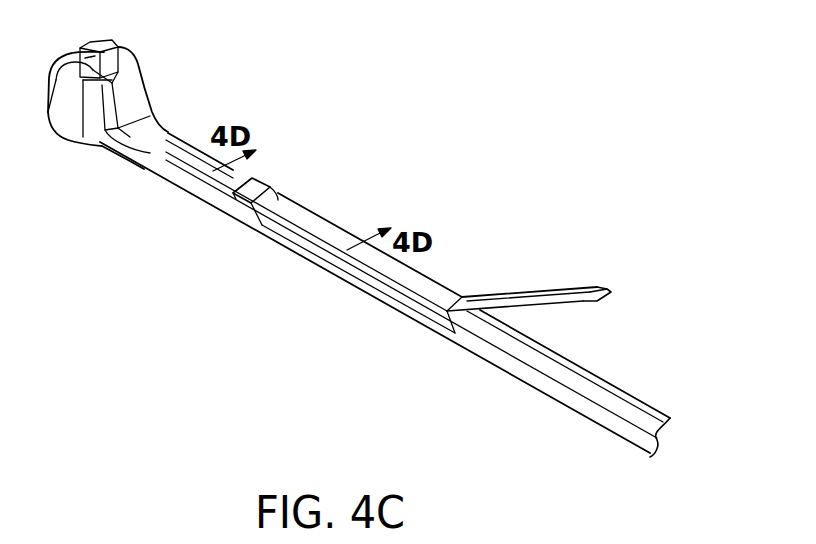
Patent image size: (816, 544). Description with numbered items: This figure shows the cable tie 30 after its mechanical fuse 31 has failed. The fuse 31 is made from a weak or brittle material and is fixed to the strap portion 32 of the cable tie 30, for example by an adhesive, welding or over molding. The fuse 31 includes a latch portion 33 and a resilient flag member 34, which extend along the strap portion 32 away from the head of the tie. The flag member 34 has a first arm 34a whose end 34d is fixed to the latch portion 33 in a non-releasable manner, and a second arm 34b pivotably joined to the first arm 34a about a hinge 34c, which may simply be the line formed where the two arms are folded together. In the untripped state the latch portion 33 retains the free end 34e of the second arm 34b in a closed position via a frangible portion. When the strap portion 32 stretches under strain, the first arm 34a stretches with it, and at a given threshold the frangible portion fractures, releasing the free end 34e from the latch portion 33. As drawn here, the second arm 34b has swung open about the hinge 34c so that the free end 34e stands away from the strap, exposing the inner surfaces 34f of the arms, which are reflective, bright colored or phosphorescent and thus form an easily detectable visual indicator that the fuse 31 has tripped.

The cable tie 30 is at (494, 99).
The mechanical fuse 31 is at (288, 134).
The strap portion 32 is at (163, 172).
The latch portion 33 is at (270, 186).
The resilient flag member 34 is at (304, 220).
The first arm 34a is at (353, 262).
The second arm 34b is at (583, 303).
The hinge 34c is at (457, 326).
The end of the first arm 34d is at (263, 238).
The free end 34e is at (600, 282).
The inner surfaces 34f is at (432, 290).